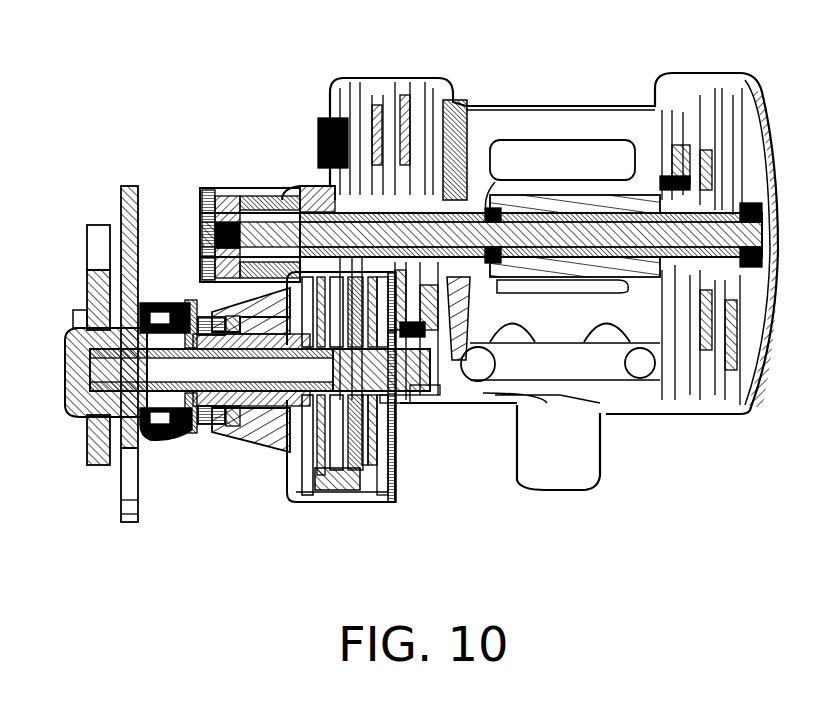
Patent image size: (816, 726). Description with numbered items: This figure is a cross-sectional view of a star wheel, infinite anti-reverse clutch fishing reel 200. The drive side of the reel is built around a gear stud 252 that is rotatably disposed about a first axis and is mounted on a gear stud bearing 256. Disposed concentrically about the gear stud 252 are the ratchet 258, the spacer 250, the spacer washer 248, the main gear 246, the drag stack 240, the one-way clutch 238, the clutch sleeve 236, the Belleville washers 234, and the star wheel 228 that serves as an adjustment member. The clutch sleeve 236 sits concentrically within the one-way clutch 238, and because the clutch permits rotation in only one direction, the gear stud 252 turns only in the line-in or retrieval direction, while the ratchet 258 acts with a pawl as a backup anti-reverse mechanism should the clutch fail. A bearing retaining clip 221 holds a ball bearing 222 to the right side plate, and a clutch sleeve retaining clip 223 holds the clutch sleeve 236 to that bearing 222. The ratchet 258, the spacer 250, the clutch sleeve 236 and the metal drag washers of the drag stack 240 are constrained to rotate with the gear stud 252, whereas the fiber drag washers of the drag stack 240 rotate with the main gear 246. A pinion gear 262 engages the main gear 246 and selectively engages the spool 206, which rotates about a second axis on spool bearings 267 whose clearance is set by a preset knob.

The fishing reel 200 is at (248, 58).
The spool 206 is at (490, 146).
The bearing retaining clip 221 is at (199, 303).
The bearing 222 is at (213, 310).
The clutch sleeve retaining clip 223 is at (233, 420).
The star wheel 228 is at (119, 205).
The Belleville washers 234 is at (167, 442).
The clutch sleeve 236 is at (183, 437).
The one-way clutch 238 is at (263, 440).
The drag stack 240 is at (365, 505).
The main gear 246 is at (287, 500).
The spacer washer 248 is at (370, 435).
The spacer 250 is at (383, 452).
The gear stud 252 is at (396, 402).
The gear stud bearing 256 is at (424, 394).
The ratchet 258 is at (381, 436).
The pinion gear 262 is at (291, 186).
The spool bearings 267 is at (277, 188).